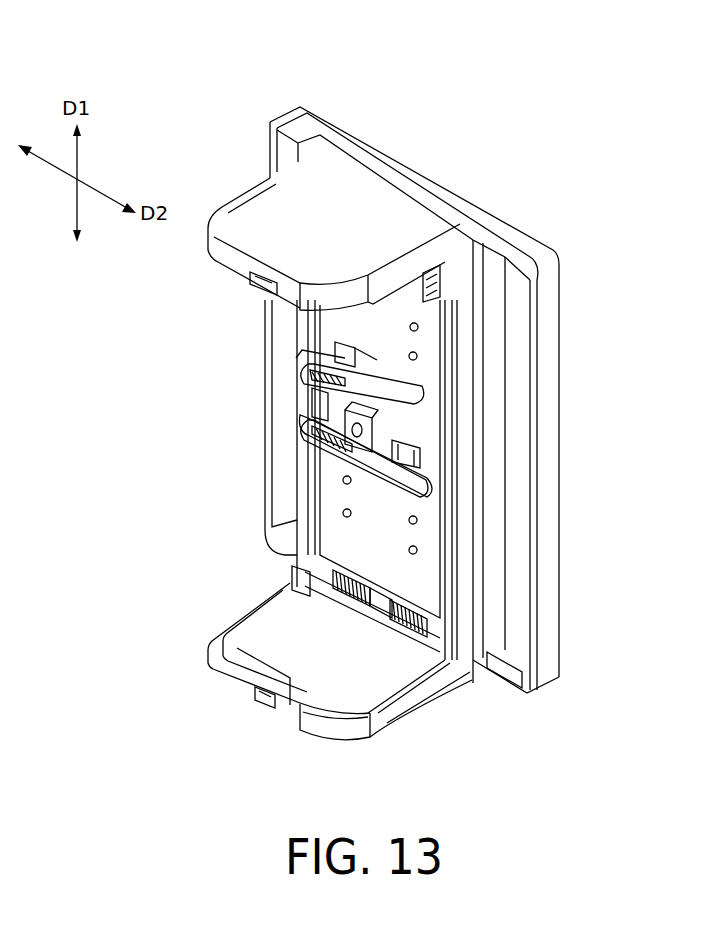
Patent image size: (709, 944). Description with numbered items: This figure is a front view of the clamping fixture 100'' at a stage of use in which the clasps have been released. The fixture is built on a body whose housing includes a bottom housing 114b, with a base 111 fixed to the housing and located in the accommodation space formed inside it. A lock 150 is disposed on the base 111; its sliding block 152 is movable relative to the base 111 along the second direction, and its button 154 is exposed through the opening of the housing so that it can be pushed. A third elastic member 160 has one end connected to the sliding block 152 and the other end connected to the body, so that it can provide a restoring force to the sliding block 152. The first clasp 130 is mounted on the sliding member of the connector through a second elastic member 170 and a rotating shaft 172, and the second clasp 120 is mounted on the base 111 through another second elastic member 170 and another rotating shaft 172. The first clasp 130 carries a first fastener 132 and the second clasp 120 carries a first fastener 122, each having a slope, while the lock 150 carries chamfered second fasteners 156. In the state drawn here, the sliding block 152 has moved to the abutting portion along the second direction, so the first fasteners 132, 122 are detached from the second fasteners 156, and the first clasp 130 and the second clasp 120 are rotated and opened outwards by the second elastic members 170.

The clamping fixture 100'' is at (163, 61).
The base 111 is at (430, 540).
The bottom housing 114b is at (548, 390).
The second clasp 120 is at (392, 212).
The first fastener 122 is at (238, 274).
The first clasp 130 is at (417, 700).
The first fastener 132 is at (256, 713).
The lock 150 is at (290, 400).
The sliding block 152 is at (420, 463).
The button 154 is at (375, 400).
The second fastener 156 is at (312, 352).
The third elastic member 160 is at (310, 378).
The second elastic member 170 is at (298, 580).
The rotating shaft 172 is at (372, 603).